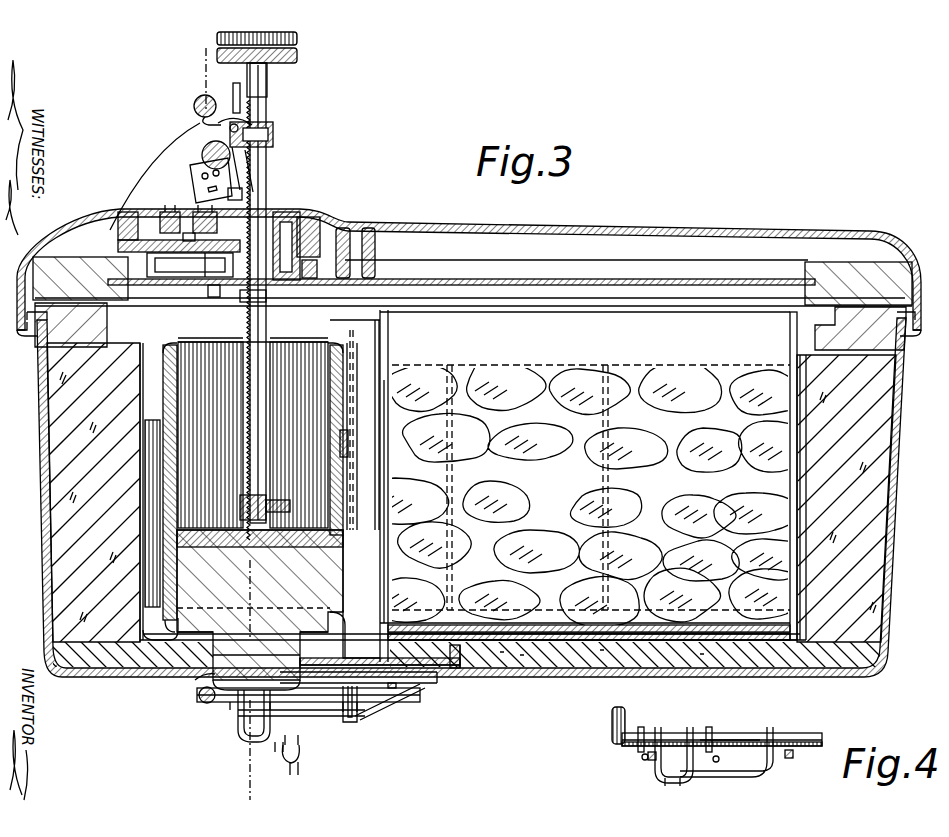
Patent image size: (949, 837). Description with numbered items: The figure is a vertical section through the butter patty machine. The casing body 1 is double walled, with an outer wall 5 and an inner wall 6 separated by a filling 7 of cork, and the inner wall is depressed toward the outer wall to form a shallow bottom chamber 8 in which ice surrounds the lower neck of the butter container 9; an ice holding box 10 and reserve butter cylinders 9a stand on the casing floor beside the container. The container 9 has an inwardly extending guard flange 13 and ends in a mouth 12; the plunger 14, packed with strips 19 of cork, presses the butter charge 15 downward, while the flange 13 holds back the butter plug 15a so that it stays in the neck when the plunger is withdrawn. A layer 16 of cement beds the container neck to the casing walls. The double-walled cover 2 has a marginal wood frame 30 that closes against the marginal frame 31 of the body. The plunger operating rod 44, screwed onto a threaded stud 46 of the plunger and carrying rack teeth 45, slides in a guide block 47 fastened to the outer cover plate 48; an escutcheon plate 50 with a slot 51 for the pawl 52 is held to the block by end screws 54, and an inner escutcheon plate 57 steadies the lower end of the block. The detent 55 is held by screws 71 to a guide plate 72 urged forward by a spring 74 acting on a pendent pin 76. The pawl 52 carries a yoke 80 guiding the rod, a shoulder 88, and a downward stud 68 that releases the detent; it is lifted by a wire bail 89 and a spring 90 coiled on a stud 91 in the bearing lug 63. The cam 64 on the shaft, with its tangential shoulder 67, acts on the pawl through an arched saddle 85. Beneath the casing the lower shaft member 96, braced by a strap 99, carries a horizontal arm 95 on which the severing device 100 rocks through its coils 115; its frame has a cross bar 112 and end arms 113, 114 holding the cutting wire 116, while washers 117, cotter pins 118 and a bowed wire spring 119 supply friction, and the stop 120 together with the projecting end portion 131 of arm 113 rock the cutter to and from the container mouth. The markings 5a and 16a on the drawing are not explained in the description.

In FIG. 3, the casing body 1 is at (380, 494).
In FIG. 3, the cover 2 is at (469, 269).
In FIG. 3, the outer wall 5 is at (40, 462).
In FIG. 3, the section line 5a is at (236, 423).
In FIG. 3, the inner wall 6 is at (158, 410).
In FIG. 3, the filling 7 is at (80, 554).
In FIG. 3, the bottom chamber 8 is at (380, 656).
In FIG. 3, the butter container 9 is at (338, 412).
In FIG. 3, the reserve butter cylinders 9a is at (158, 362).
In FIG. 3, the ice holding box 10 is at (590, 494).
In FIG. 3, the mouth 12 is at (256, 678).
In FIG. 3, the guard flange 13 is at (261, 634).
In FIG. 3, the plunger 14 is at (289, 507).
In FIG. 3, the butter charge 15 is at (260, 605).
In FIG. 3, the butter plug 15a is at (252, 643).
In FIG. 3, the cement layer 16 is at (240, 503).
In FIG. 3, the wall flange 16a is at (343, 598).
In FIG. 3, the cork strips 19 is at (383, 528).
In FIG. 3, the cover frame 30 is at (35, 262).
In FIG. 3, the casing body frame 31 is at (48, 340).
In FIG. 3, the plunger operating rod 44 is at (266, 96).
In FIG. 3, the rack teeth 45 is at (268, 348).
In FIG. 3, the threaded stud 46 is at (152, 560).
In FIG. 3, the guide block 47 is at (112, 278).
In FIG. 3, the outer cover plate 48 is at (600, 228).
In FIG. 3, the escutcheon plate 50 is at (140, 214).
In FIG. 3, the slot 51 is at (300, 215).
In FIG. 3, the pawl 52 is at (258, 185).
In FIG. 3, the end screws 54 is at (126, 212).
In FIG. 3, the rack rod detent 55 is at (172, 212).
In FIG. 3, the inner escutcheon plate 57 is at (246, 302).
In FIG. 3, the bearing lug 63 is at (190, 128).
In FIG. 3, the cam 64 is at (218, 124).
In FIG. 3, the tangential shoulder 67 is at (250, 152).
In FIG. 3, the stud 68 is at (233, 198).
In FIG. 3, the screws 71 is at (192, 233).
In FIG. 3, the guide plate 72 is at (140, 250).
In FIG. 3, the spring 74 is at (190, 265).
In FIG. 3, the pendent pin 76 is at (214, 286).
In FIG. 3, the yoke 80 is at (273, 136).
In FIG. 3, the arched saddle 85 is at (202, 154).
In FIG. 3, the shoulder 88 is at (190, 170).
In FIG. 3, the wire bail 89 is at (252, 104).
In FIG. 3, the spring 90 is at (233, 90).
In FIG. 3, the stud 91 is at (194, 103).
In FIG. 3, the shaft arm 95 is at (324, 702).
In FIG. 4, the shaft arm 95 is at (745, 727).
In FIG. 3, the lower shaft member 96 is at (200, 698).
In FIG. 4, the lower shaft member 96 is at (612, 728).
In FIG. 3, the strap 99 is at (355, 443).
In FIG. 3, the severing device 100 is at (299, 734).
In FIG. 4, the severing device 100 is at (745, 734).
In FIG. 3, the cross bar 112 is at (340, 720).
In FIG. 4, the cross bar 112 is at (735, 780).
In FIG. 4, the end arm 113 is at (790, 758).
In FIG. 4, the end arm 114 is at (652, 760).
In FIG. 3, the coils 115 is at (244, 725).
In FIG. 4, the coils 115 is at (676, 727).
In FIG. 3, the cutting wire 116 is at (358, 678).
In FIG. 4, the washers 117 is at (641, 727).
In FIG. 3, the cotter pins 118 is at (212, 708).
In FIG. 4, the cotter pins 118 is at (642, 757).
In FIG. 3, the bowed wire spring 119 is at (275, 750).
In FIG. 4, the bowed wire spring 119 is at (676, 786).
In FIG. 3, the stop 120 is at (292, 772).
In FIG. 3, the end portion 131 is at (396, 702).